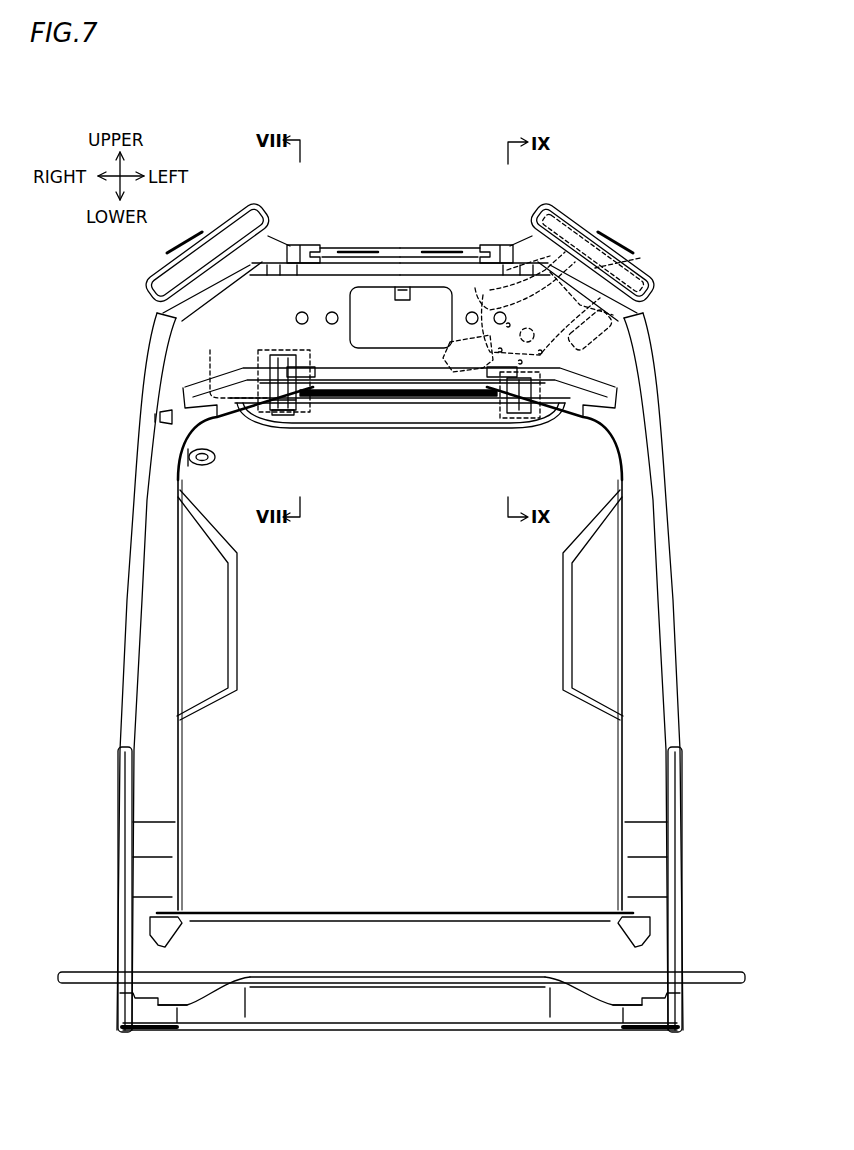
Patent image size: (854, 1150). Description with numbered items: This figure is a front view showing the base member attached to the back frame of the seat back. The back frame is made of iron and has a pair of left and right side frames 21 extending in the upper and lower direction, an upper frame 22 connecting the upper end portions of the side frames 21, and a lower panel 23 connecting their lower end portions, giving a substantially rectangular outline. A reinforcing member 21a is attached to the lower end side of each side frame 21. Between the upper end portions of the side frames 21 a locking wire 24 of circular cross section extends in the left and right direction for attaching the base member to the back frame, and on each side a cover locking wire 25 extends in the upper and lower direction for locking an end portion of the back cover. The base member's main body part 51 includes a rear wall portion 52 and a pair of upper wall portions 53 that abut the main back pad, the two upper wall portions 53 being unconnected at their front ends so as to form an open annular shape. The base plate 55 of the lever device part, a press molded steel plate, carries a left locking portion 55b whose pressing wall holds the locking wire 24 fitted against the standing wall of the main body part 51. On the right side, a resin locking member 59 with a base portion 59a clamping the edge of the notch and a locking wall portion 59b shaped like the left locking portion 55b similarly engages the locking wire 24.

The side frame 21 is at (131, 585).
The reinforcing member 21a is at (122, 778).
The upper frame 22 is at (327, 292).
The lower panel 23 is at (412, 1020).
The locking wire 24 is at (433, 400).
The cover locking wire 25 is at (240, 626).
The main body part 51 is at (416, 320).
The rear wall portion 52 is at (358, 413).
The upper wall portion 53 is at (230, 232).
The base plate 55 is at (541, 343).
The left locking portion 55b is at (527, 413).
The locking member 59 is at (260, 383).
The base portion 59a is at (257, 362).
The locking wall portion 59b is at (277, 415).